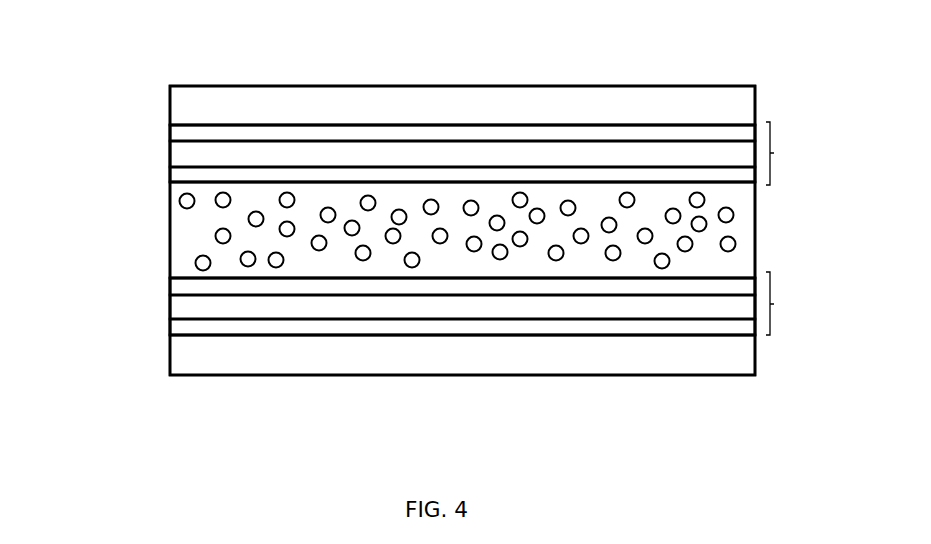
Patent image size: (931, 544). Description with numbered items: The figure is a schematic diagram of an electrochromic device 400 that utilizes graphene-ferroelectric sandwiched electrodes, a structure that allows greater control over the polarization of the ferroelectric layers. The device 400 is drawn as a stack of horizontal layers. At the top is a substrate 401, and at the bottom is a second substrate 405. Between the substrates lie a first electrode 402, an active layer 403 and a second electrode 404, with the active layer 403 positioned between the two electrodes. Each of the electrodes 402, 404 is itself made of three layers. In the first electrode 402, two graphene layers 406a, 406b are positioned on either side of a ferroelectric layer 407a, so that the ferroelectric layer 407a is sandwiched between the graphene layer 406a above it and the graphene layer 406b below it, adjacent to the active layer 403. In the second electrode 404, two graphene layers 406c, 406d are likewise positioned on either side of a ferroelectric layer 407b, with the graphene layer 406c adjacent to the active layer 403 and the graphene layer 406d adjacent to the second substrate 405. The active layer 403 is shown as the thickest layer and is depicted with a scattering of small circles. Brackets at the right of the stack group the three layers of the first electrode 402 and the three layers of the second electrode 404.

The electrochromic device 400 is at (602, 75).
The substrate 401 is at (168, 102).
The first electrode 402 is at (792, 162).
The active layer 403 is at (168, 238).
The second electrode 404 is at (783, 308).
The second substrate 405 is at (168, 358).
The graphene layer 406a is at (168, 133).
The graphene layer 406b is at (168, 176).
The graphene layer 406c is at (168, 287).
The graphene layer 406d is at (168, 327).
The ferroelectric layer 407a is at (168, 158).
The ferroelectric layer 407b is at (168, 310).